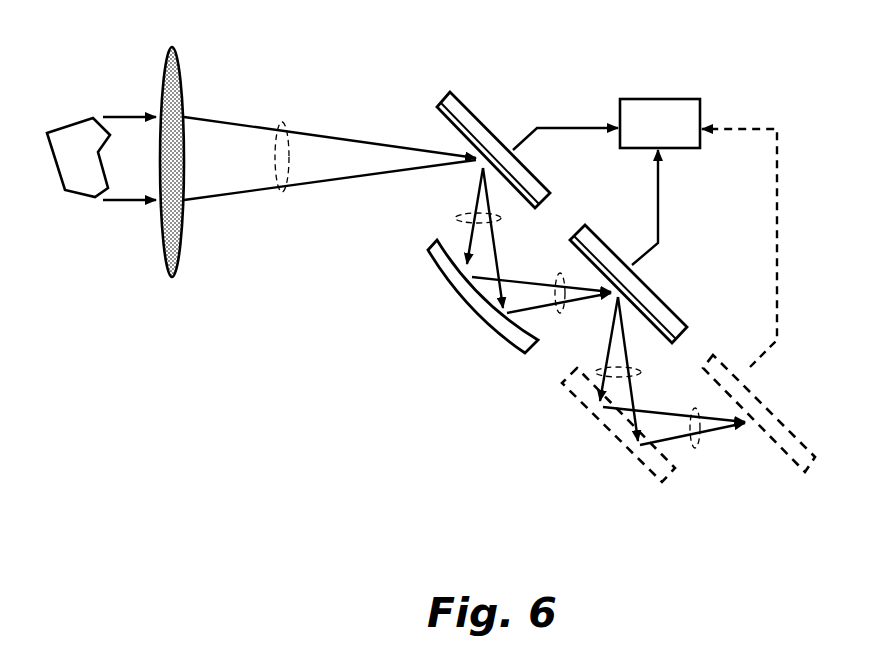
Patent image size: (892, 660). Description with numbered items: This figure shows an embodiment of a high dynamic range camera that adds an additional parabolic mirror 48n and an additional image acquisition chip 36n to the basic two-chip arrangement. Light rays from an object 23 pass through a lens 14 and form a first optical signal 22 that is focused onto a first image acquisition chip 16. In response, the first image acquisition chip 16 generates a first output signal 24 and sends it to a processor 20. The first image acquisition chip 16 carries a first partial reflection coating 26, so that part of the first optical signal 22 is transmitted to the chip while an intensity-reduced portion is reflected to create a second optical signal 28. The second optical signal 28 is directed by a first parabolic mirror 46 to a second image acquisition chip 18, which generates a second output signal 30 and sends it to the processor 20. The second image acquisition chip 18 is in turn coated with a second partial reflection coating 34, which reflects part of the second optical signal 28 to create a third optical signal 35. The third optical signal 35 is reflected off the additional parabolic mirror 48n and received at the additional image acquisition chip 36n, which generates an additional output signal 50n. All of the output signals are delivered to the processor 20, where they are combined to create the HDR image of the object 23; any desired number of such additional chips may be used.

The lens 14 is at (178, 60).
The object 23 is at (75, 120).
The first optical signal 22 is at (283, 194).
The first image acquisition chip 16 is at (493, 130).
The first partial reflection coating 26 is at (435, 110).
The first output signal 24 is at (563, 126).
The processor 20 is at (643, 98).
The second output signal 30 is at (660, 184).
The second partial reflection coating 34 is at (562, 240).
The second image acquisition chip 18 is at (657, 292).
The second optical signal 28 is at (502, 220).
The first parabolic mirror 46 is at (473, 297).
The third optical signal 35 is at (695, 414).
The additional image acquisition chip 36n is at (763, 400).
The additional parabolic mirror 48n is at (600, 416).
The additional output signal 50n is at (777, 230).